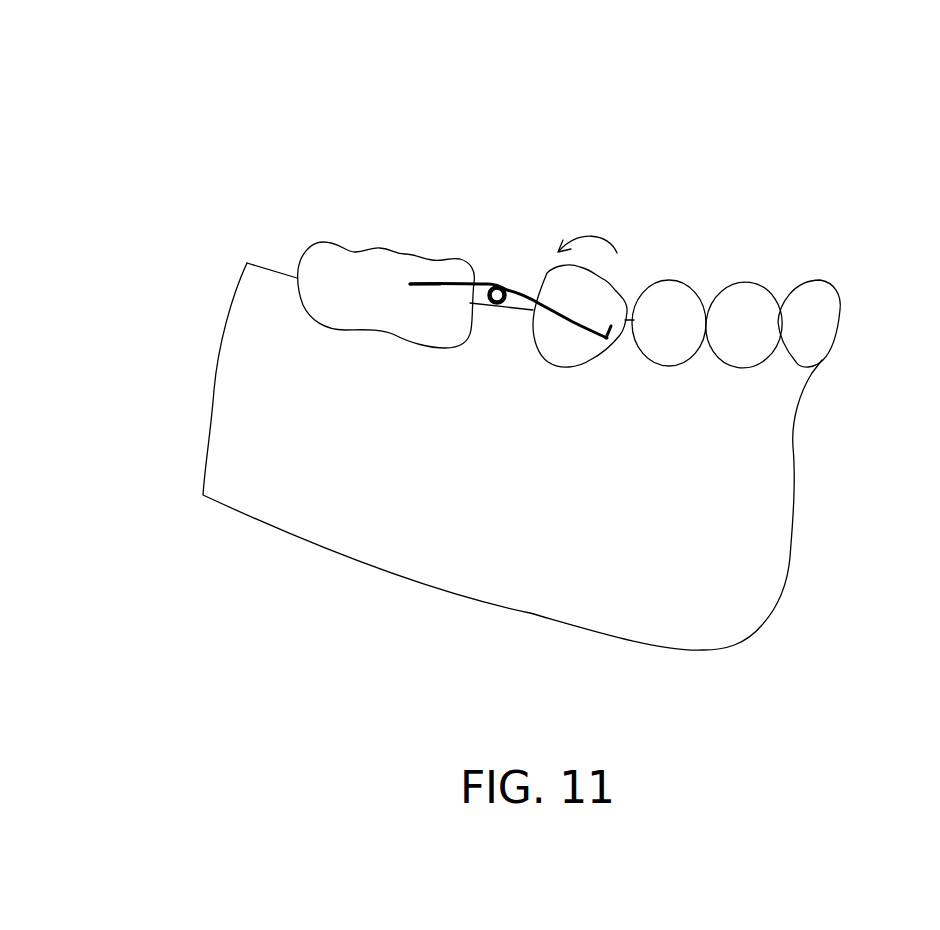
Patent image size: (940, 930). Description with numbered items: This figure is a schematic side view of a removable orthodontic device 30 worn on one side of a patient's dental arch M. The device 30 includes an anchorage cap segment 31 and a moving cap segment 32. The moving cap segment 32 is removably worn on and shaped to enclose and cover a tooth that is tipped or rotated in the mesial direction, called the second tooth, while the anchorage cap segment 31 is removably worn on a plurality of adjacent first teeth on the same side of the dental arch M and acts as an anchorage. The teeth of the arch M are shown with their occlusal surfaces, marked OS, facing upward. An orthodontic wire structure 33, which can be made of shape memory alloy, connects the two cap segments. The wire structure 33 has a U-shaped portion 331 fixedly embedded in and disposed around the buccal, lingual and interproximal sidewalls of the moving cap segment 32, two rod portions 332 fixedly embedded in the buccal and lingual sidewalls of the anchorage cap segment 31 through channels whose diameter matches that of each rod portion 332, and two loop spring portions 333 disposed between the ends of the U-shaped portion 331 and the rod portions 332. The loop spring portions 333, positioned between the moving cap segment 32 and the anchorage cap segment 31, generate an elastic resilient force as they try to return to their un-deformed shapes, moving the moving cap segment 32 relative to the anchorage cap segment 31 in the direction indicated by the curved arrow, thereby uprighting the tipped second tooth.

The removable orthodontic device 30 is at (197, 101).
The anchorage cap segment 31 is at (328, 230).
The moving cap segment 32 is at (543, 268).
The orthodontic wire structure 33 is at (597, 436).
The U-shaped portion 331 is at (572, 326).
The rod portion 332 is at (422, 290).
The loop spring portion 333 is at (496, 310).
The dental arch M is at (795, 525).
The occlusal surface OS is at (380, 250).